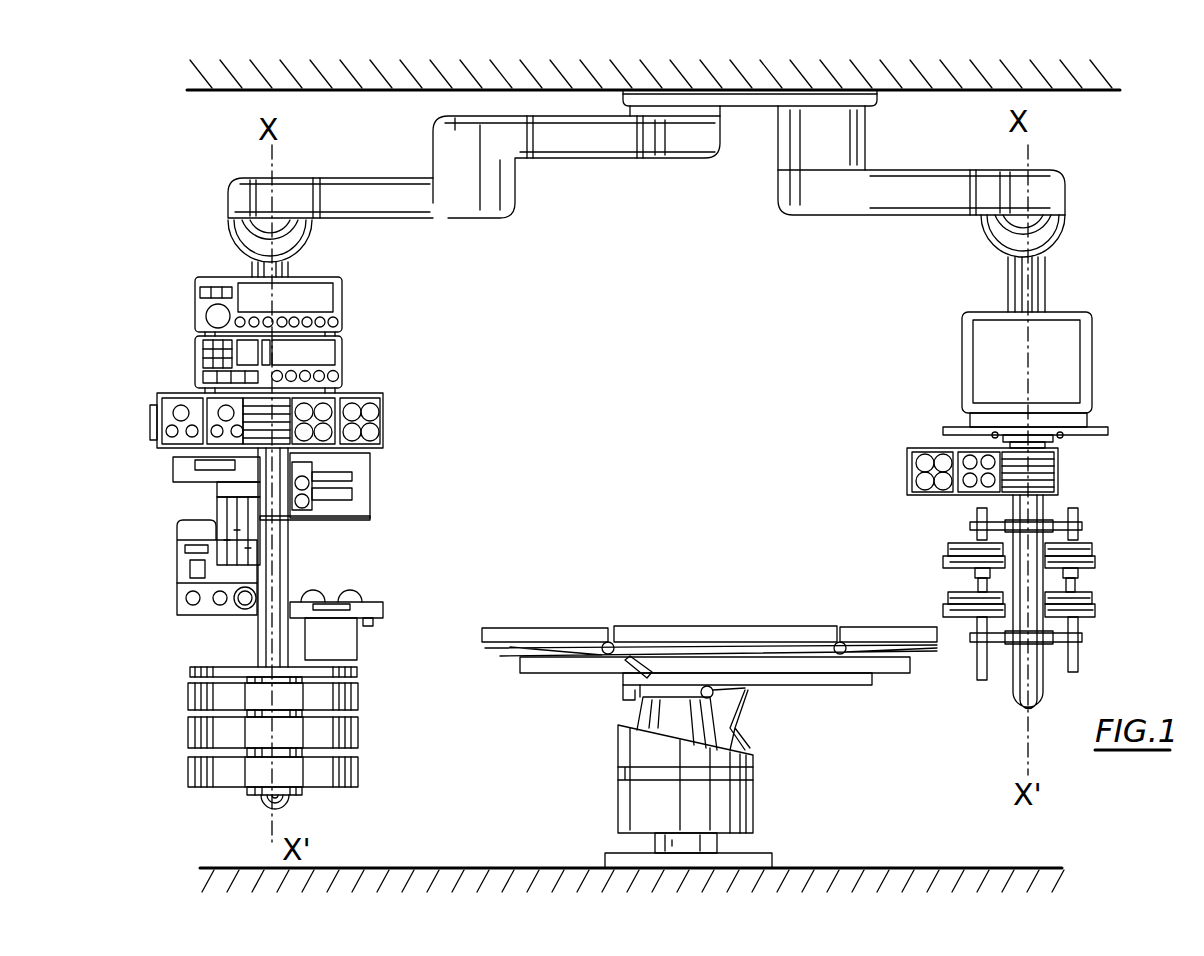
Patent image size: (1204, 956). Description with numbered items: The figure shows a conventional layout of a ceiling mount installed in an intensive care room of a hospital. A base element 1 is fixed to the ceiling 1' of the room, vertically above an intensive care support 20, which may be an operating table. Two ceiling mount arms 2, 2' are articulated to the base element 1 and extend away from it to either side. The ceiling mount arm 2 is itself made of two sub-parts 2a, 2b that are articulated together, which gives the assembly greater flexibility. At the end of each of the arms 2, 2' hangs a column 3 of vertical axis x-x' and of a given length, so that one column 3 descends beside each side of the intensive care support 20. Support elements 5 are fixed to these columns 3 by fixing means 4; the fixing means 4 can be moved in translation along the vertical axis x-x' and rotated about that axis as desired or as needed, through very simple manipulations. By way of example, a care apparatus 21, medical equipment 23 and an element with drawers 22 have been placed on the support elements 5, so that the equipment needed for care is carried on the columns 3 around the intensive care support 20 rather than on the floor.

The base element 1 is at (797, 113).
The ceiling 1' is at (650, 102).
The ceiling mount arm 2 is at (474, 192).
The ceiling mount arm 2' is at (972, 160).
The sub-part 2a is at (592, 140).
The sub-part 2b is at (385, 196).
The column 3 is at (296, 268).
The fixing means 4 is at (288, 572).
The support elements 5 is at (328, 523).
The intensive care support 20 is at (690, 615).
The care apparatus 21 is at (358, 356).
The element with drawers 22 is at (365, 734).
The medical equipment 23 is at (370, 585).